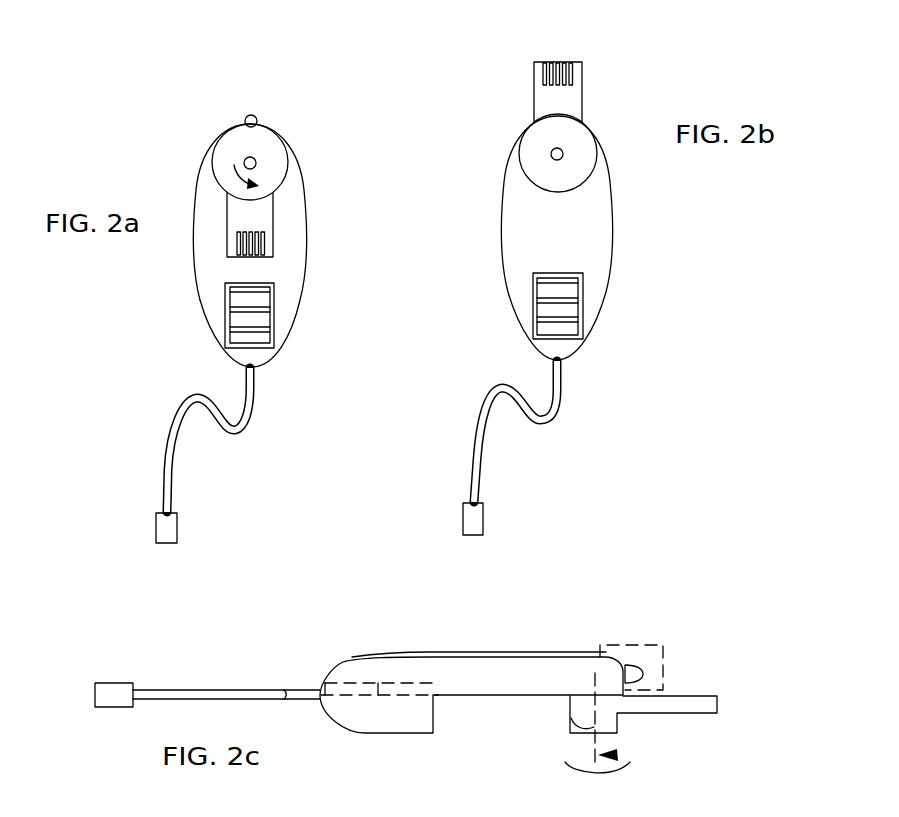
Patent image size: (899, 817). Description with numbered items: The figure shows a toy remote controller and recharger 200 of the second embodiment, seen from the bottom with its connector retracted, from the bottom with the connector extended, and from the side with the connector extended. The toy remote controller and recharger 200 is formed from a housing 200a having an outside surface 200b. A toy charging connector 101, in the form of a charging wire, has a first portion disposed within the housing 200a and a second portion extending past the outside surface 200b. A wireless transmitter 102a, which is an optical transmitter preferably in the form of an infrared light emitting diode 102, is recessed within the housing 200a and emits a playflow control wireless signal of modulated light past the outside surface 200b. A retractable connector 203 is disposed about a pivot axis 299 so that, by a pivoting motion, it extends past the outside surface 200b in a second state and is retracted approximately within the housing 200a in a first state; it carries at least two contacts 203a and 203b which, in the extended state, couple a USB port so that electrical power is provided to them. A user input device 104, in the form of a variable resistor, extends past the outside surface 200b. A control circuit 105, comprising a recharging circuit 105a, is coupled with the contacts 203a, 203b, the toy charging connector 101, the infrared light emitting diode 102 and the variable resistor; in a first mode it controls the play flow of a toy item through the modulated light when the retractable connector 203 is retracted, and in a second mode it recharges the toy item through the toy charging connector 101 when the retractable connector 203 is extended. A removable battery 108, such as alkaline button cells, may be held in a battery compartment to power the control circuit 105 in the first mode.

In FIG. 2a, the toy remote controller and recharger 200 is at (303, 193).
In FIG. 2b, the toy remote controller and recharger 200 is at (648, 99).
In FIG. 2c, the toy remote controller and recharger 200 is at (648, 619).
In FIG. 2a, the housing 200a is at (307, 230).
In FIG. 2a, the outside surface 200b is at (285, 298).
In FIG. 2a, the toy charging connector 101 is at (162, 463).
In FIG. 2b, the toy charging connector 101 is at (470, 442).
In FIG. 2c, the toy charging connector 101 is at (197, 690).
In FIG. 2a, the infrared light emitting diode 102 is at (247, 118).
In FIG. 2c, the infrared light emitting diode 102 is at (632, 677).
In FIG. 2c, the wireless transmitter 102a is at (658, 642).
In FIG. 2c, the user input device 104 is at (560, 654).
In FIG. 2c, the control circuit 105 is at (428, 690).
In FIG. 2c, the recharging circuit 105a is at (350, 690).
In FIG. 2a, the removable battery 108 is at (243, 320).
In FIG. 2b, the removable battery 108 is at (563, 310).
In FIG. 2a, the retractable connector 203 is at (263, 192).
In FIG. 2b, the retractable connector 203 is at (539, 101).
In FIG. 2c, the retractable connector 203 is at (657, 705).
In FIG. 2b, the contact 203a is at (547, 62).
In FIG. 2b, the contact 203b is at (580, 83).
In FIG. 2a, the pivot axis 299 is at (256, 160).
In FIG. 2b, the pivot axis 299 is at (565, 157).
In FIG. 2c, the pivot axis 299 is at (570, 718).